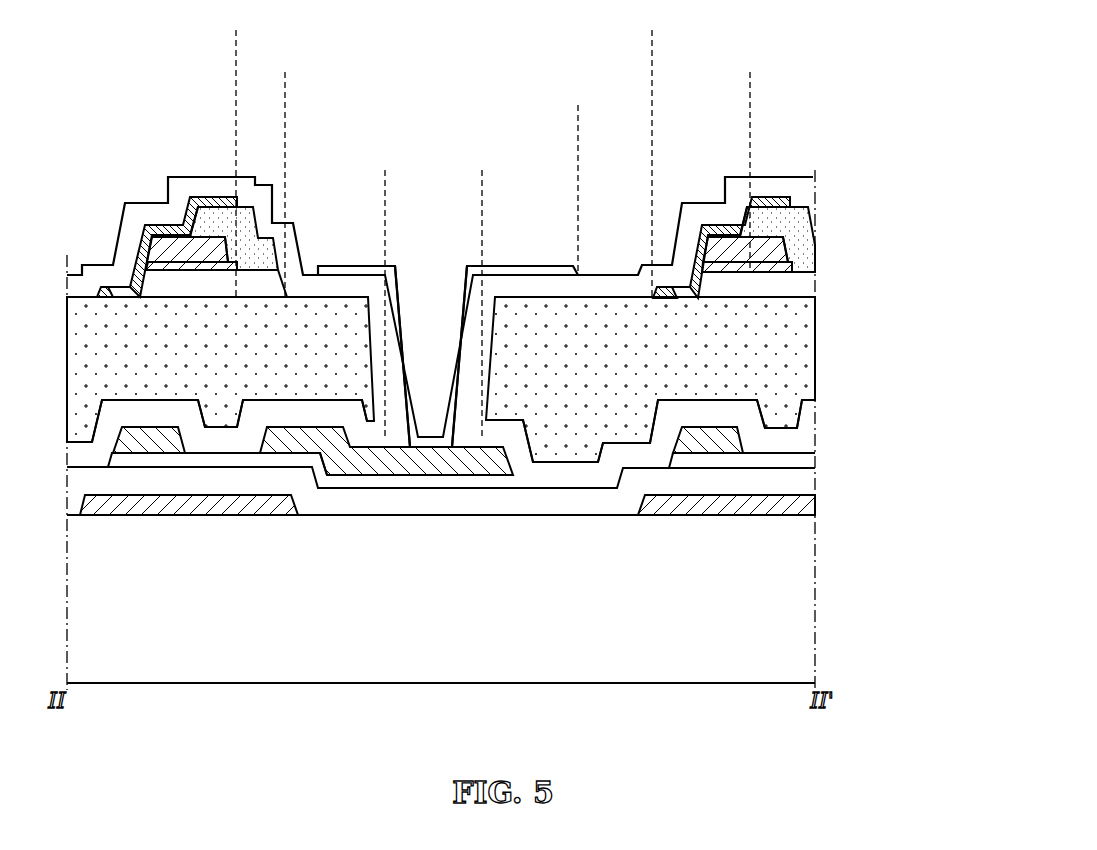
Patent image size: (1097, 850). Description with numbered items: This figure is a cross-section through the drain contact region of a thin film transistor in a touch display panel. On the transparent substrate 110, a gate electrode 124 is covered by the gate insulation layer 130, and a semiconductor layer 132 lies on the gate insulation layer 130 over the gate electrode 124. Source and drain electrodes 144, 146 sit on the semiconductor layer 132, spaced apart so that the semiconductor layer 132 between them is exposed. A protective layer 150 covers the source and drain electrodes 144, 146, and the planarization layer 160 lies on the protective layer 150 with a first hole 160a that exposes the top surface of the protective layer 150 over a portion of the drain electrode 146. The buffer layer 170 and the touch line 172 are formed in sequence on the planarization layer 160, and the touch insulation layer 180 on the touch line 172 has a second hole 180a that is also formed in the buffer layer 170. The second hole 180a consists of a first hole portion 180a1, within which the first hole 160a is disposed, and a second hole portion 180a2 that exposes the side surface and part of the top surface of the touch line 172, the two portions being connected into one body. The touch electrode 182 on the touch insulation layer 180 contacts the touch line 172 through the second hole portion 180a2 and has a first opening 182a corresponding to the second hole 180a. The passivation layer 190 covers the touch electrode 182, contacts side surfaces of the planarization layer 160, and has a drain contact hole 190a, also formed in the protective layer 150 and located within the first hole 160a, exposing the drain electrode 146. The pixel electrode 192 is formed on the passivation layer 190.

The substrate 110 is at (805, 590).
The gate electrode 124 is at (217, 505).
The gate insulation layer 130 is at (805, 478).
The semiconductor layer 132 is at (330, 483).
The source electrode 144 is at (140, 447).
The drain electrode 146 is at (445, 465).
The protective layer 150 is at (805, 430).
The planarization layer 160 is at (805, 372).
The first hole 160a is at (482, 188).
The buffer layer 170 is at (805, 283).
The touch line 172 is at (176, 245).
The touch insulation layer 180 is at (805, 257).
The second hole 180a is at (750, 87).
The first hole portion 180a1 is at (285, 122).
The second hole portion 180a2 is at (578, 122).
The touch electrode 182 is at (105, 285).
The first opening 182a is at (652, 44).
The passivation layer 190 is at (800, 192).
The drain contact hole 190a is at (431, 375).
The pixel electrode 192 is at (538, 266).